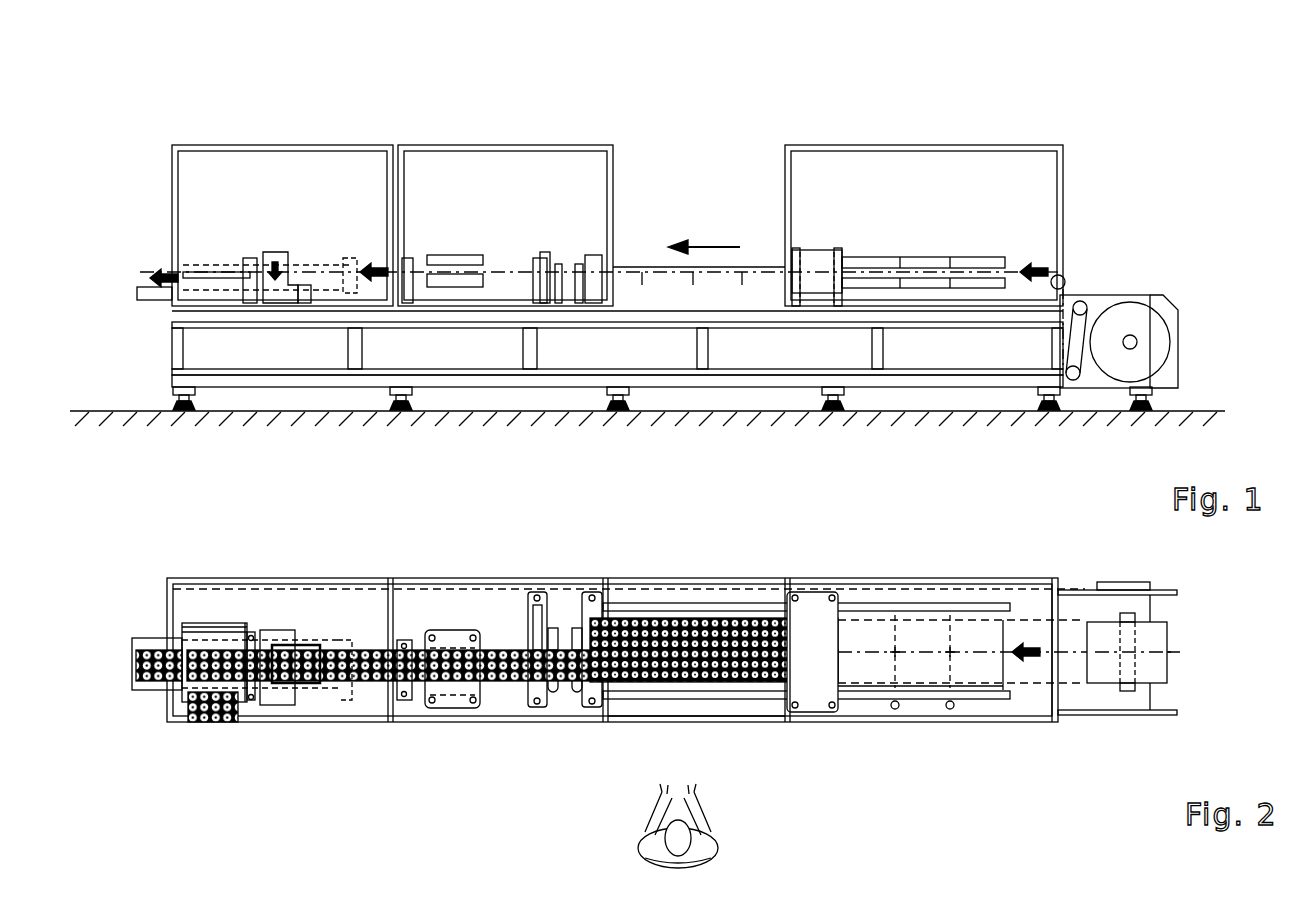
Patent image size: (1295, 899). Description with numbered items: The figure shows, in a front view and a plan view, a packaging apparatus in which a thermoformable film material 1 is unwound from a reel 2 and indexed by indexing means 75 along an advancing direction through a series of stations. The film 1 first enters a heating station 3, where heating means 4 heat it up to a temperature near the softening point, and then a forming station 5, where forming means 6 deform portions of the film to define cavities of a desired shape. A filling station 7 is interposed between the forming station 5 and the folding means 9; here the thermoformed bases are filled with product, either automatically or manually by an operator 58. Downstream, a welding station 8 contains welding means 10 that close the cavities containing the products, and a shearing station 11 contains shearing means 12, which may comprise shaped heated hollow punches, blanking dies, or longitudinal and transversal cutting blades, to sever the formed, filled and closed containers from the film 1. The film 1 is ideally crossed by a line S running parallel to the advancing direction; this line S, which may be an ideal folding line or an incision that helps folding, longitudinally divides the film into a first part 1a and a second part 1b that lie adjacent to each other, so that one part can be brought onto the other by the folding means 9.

In FIG. 1, the thermoformable film material 1 is at (1068, 288).
In FIG. 2, the thermoformable film material 1 is at (1070, 636).
In FIG. 2, the first part of film 1a is at (813, 690).
In FIG. 2, the second part of film 1b is at (728, 625).
In FIG. 1, the reel 2 is at (1170, 318).
In FIG. 2, the reel 2 is at (1158, 636).
In FIG. 1, the heating station 3 is at (967, 206).
In FIG. 2, the heating station 3 is at (984, 578).
In FIG. 1, the heating means 4 is at (978, 259).
In FIG. 2, the heating means 4 is at (965, 632).
In FIG. 1, the forming station 5 is at (818, 224).
In FIG. 2, the forming station 5 is at (833, 576).
In FIG. 1, the forming means 6 is at (822, 250).
In FIG. 2, the forming means 6 is at (810, 606).
In FIG. 1, the filling station 7 is at (718, 176).
In FIG. 2, the filling station 7 is at (752, 703).
In FIG. 1, the welding station 8 is at (449, 224).
In FIG. 2, the welding station 8 is at (495, 733).
In FIG. 1, the folding means 9 is at (580, 263).
In FIG. 2, the folding means 9 is at (558, 628).
In FIG. 1, the welding means 10 is at (481, 256).
In FIG. 2, the welding means 10 is at (455, 632).
In FIG. 1, the shearing station 11 is at (211, 231).
In FIG. 2, the shearing station 11 is at (287, 733).
In FIG. 1, the shearing means 12 is at (286, 252).
In FIG. 2, the shearing means 12 is at (278, 632).
In FIG. 2, the operator 58 is at (740, 838).
In FIG. 2, the indexing means 75 is at (660, 605).
In FIG. 2, the line S is at (1177, 653).